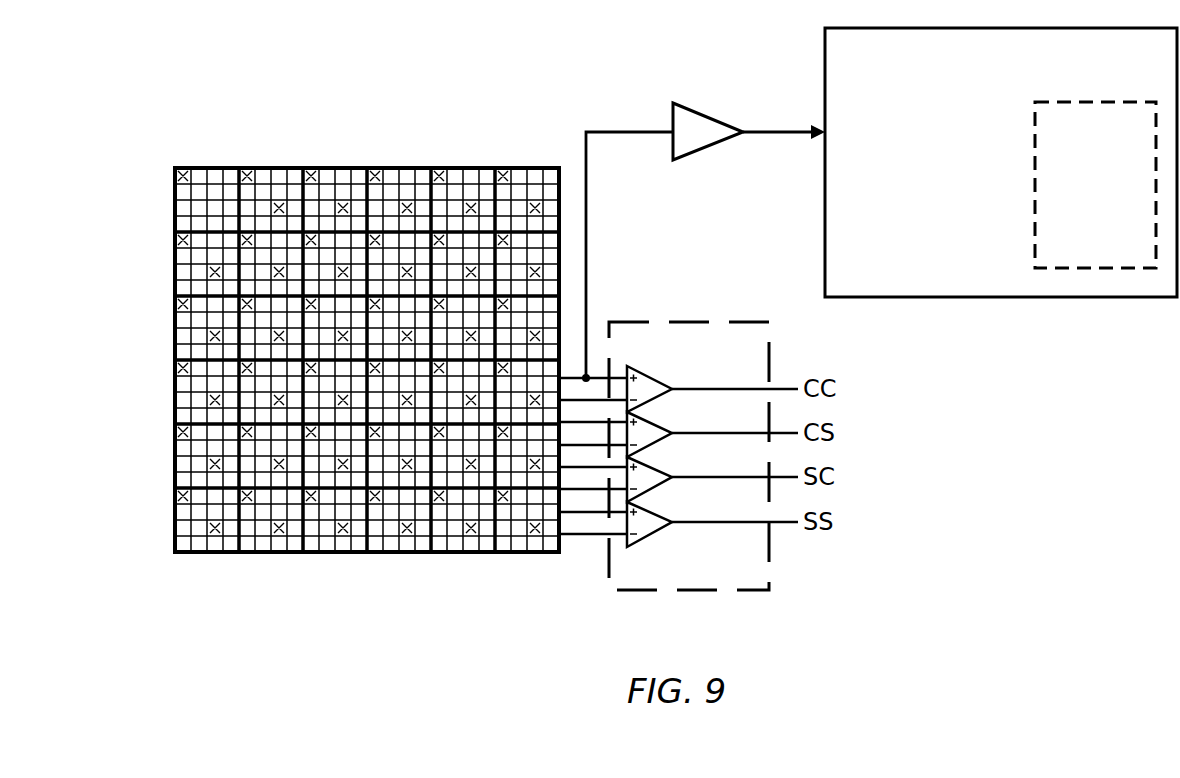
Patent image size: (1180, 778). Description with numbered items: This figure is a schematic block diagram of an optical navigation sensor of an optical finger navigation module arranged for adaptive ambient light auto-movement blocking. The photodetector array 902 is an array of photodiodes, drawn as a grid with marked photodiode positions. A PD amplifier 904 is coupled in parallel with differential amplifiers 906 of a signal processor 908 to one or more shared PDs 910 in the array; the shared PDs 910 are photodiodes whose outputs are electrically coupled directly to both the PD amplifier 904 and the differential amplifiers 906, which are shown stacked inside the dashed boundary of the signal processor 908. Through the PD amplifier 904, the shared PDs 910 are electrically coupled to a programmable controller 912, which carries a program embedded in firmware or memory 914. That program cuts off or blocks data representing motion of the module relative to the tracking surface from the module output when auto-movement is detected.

The photodetector array 902 is at (258, 219).
The PD amplifier 904 is at (706, 148).
The differential amplifiers 906 is at (641, 363).
The signal processor 908 is at (717, 580).
The shared PDs 910 is at (497, 168).
The programmable controller 912 is at (895, 63).
The firmware or memory 914 is at (1095, 185).